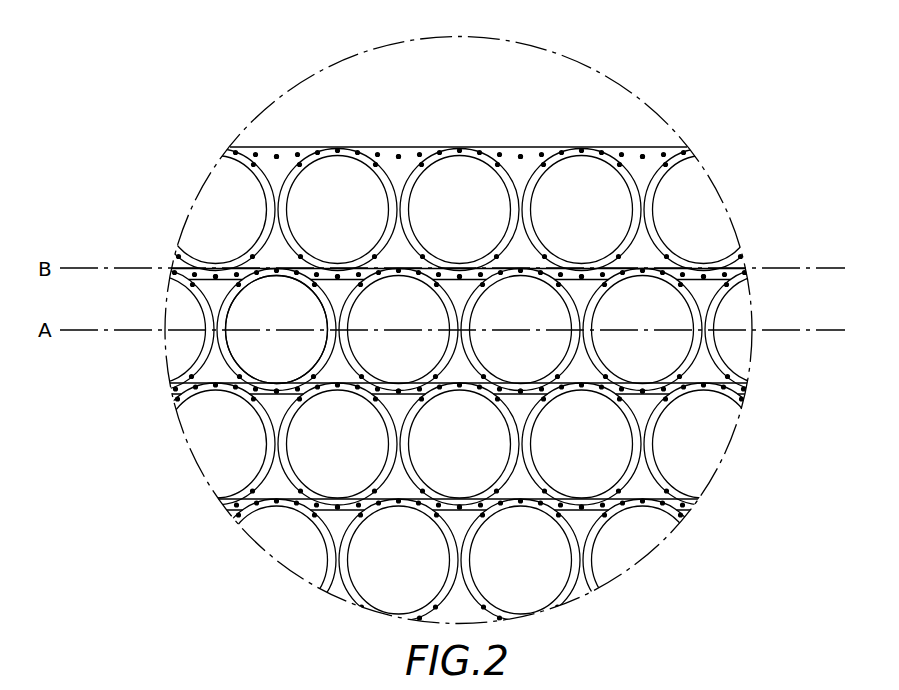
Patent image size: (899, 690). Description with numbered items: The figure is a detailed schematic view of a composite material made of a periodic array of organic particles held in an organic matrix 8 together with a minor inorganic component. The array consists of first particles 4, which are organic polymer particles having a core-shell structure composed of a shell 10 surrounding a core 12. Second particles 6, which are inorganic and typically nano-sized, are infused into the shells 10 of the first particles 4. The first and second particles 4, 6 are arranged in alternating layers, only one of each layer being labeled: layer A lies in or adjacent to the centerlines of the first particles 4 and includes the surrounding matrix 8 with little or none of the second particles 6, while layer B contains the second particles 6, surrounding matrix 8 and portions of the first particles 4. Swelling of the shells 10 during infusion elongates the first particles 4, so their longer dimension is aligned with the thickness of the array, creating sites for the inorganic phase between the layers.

The first particles 4 is at (292, 155).
The second particles 6 is at (690, 500).
The matrix 8 is at (644, 158).
The shell 10 is at (254, 379).
The core 12 is at (245, 352).